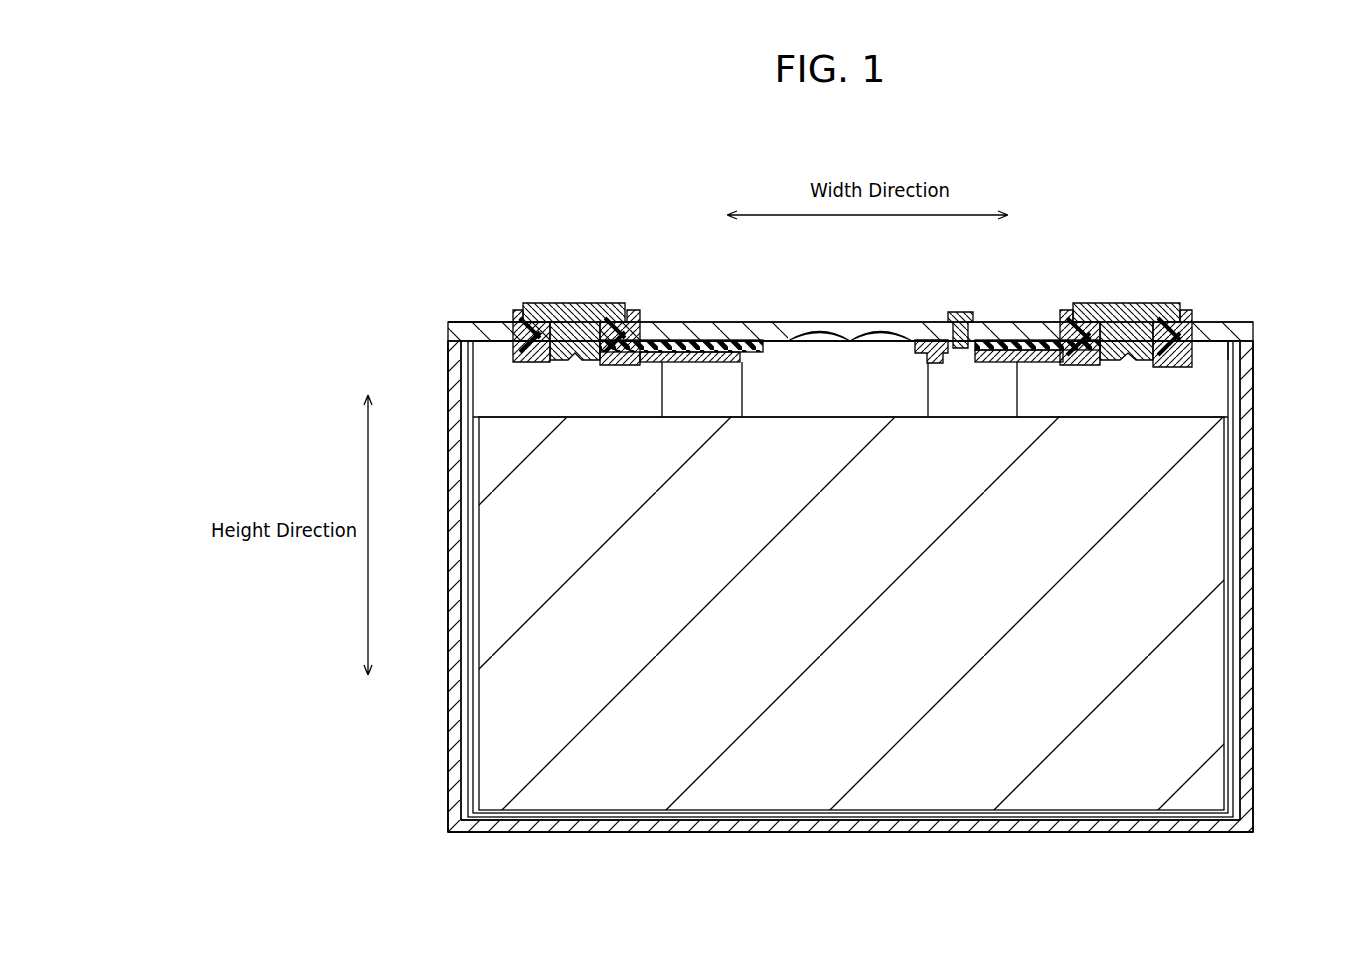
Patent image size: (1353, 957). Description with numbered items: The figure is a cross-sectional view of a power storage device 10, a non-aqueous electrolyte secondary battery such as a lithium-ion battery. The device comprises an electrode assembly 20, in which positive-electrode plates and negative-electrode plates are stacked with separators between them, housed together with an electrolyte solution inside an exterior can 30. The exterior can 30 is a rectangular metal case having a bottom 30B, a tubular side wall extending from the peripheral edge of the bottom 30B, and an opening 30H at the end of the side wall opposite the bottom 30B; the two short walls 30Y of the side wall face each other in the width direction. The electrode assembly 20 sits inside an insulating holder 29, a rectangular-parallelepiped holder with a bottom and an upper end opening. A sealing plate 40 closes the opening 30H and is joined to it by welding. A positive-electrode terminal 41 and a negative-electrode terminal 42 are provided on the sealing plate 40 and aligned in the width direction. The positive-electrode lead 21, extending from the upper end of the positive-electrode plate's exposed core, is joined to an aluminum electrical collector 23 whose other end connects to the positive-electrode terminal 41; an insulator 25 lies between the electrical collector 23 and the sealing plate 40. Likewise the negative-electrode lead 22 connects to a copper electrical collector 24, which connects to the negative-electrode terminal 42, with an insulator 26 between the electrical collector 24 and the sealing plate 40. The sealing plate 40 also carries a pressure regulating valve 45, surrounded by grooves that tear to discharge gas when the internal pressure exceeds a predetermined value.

The power storage device 10 is at (1200, 265).
The electrode assembly 20 is at (1170, 520).
The positive-electrode lead 21 is at (948, 387).
The negative-electrode lead 22 is at (683, 385).
The electrical collector 23 is at (1035, 355).
The electrical collector 24 is at (535, 360).
The insulator 25 is at (989, 345).
The insulator 26 is at (745, 345).
The insulating holder 29 is at (1226, 367).
The exterior can 30 is at (1255, 392).
The bottom 30B is at (910, 833).
The opening 30H is at (478, 322).
The short wall 30Y is at (448, 571).
The sealing plate 40 is at (710, 313).
The positive-electrode terminal 41 is at (1121, 303).
The negative-electrode terminal 42 is at (566, 303).
The pressure regulating valve 45 is at (830, 328).